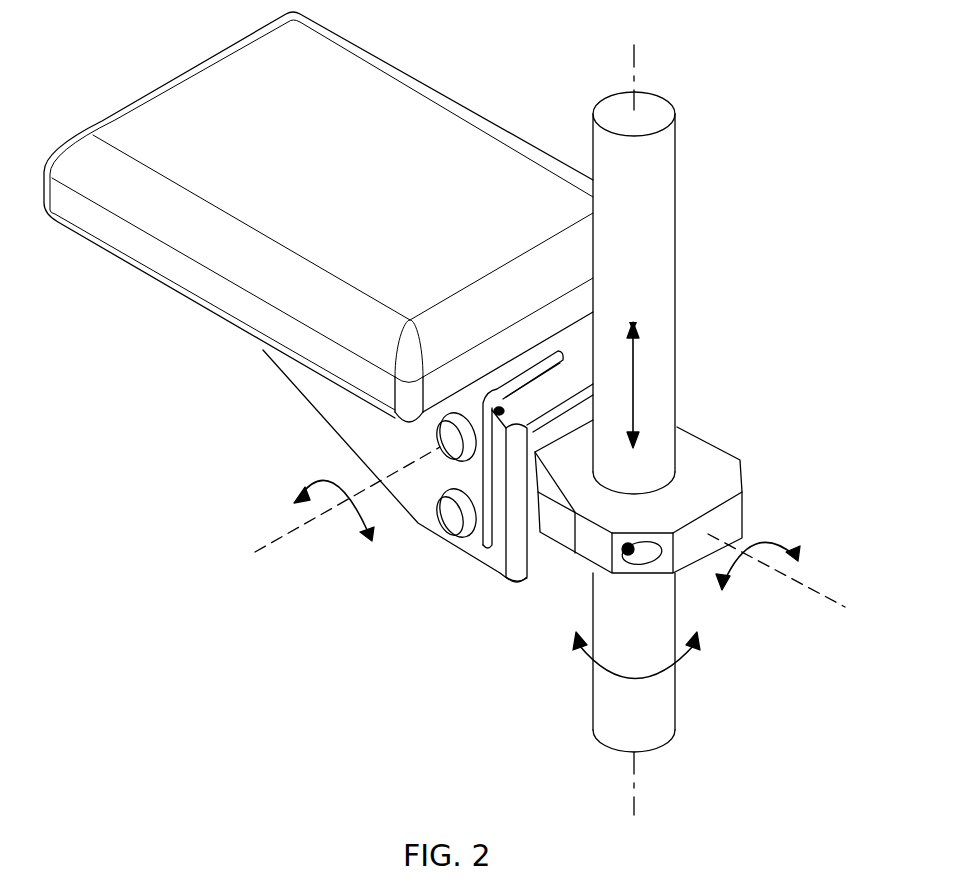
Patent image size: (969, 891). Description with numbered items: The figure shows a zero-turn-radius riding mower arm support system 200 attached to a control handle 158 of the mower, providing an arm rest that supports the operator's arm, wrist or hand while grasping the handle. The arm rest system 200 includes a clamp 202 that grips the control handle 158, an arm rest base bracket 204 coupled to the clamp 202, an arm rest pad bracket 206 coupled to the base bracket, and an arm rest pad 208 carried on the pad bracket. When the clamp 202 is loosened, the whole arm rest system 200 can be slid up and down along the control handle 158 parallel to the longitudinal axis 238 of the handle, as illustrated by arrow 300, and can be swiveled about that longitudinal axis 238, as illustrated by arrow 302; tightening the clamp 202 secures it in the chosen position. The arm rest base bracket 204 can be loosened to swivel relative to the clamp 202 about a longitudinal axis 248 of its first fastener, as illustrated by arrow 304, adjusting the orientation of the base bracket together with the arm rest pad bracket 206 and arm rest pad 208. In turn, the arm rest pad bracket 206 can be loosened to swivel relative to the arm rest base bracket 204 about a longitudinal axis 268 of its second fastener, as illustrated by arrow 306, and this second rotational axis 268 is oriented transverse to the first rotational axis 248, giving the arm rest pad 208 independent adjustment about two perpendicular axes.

The ZTR riding mower arm support system 200 is at (417, 42).
The arm rest pad 208 is at (143, 71).
The arm rest pad bracket 206 is at (292, 402).
The arm rest base bracket 204 is at (468, 569).
The ZTR arm rest clamp 202 is at (751, 461).
The control handle 158 is at (681, 178).
The longitudinal axis of the control handle 238 is at (642, 74).
The arrow 300 is at (644, 372).
The arrow 302 is at (692, 662).
The longitudinal axis of the first fastener 248 is at (825, 586).
The arrow 304 is at (782, 530).
The longitudinal axis of the second fastener 268 is at (271, 537).
The arrow 306 is at (303, 484).